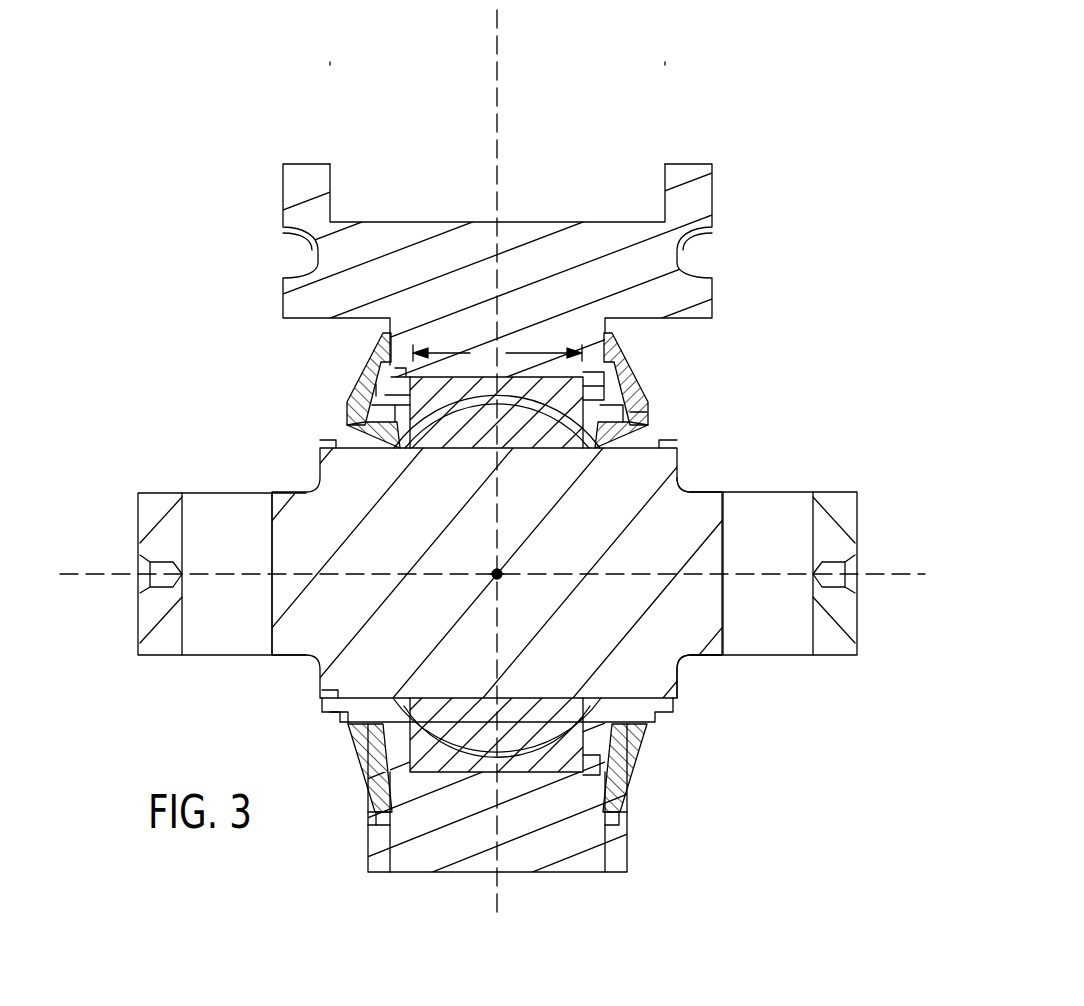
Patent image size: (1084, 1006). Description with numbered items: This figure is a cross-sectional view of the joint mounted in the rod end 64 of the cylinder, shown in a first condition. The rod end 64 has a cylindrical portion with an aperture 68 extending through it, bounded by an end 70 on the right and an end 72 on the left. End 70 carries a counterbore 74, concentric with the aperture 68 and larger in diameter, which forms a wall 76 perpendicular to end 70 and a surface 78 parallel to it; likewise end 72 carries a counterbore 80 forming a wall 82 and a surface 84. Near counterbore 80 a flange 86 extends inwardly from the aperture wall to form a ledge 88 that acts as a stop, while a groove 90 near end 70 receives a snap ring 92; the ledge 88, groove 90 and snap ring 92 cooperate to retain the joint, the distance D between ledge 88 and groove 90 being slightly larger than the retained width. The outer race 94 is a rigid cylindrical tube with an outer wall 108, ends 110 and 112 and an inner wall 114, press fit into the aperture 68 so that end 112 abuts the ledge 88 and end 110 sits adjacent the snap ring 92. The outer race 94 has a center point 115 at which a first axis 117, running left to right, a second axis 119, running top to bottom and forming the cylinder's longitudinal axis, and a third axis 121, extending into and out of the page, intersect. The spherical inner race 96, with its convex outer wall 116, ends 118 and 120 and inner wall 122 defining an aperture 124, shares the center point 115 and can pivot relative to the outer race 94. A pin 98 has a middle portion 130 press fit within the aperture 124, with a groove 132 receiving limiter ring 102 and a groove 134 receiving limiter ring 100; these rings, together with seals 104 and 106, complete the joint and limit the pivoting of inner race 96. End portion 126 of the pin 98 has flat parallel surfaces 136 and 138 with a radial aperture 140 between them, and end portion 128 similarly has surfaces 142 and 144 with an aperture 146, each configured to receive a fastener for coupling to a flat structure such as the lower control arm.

The rod end 64 is at (260, 180).
The aperture 68 is at (548, 385).
The end 70 is at (626, 862).
The end 72 is at (370, 868).
The counterbore 74 is at (604, 830).
The wall 76 is at (627, 827).
The surface 78 is at (612, 825).
The counterbore 80 is at (392, 836).
The wall 82 is at (374, 827).
The surface 84 is at (380, 822).
The flange 86 is at (376, 757).
The ledge 88 is at (428, 778).
The groove 90 is at (583, 776).
The snap ring 92 is at (620, 377).
The outer race 94 is at (648, 412).
The inner race 96 is at (648, 428).
The pin 98 is at (868, 484).
The limiter ring 100 is at (682, 466).
The limiter ring 102 is at (347, 436).
The seal 104 is at (636, 352).
The seal 106 is at (372, 342).
The outer wall 108 is at (517, 778).
The end 110 is at (645, 400).
The end 112 is at (384, 380).
The inner wall 114 is at (352, 726).
The center point 115 is at (500, 573).
The outer wall 116 is at (388, 390).
The first axis 117 is at (73, 575).
The end 118 is at (603, 452).
The second axis 119 is at (500, 66).
The end 120 is at (350, 447).
The third axis 121 is at (496, 578).
The inner wall 122 is at (517, 450).
The aperture 124 is at (325, 472).
The end portion 126 is at (133, 482).
The end portion 128 is at (838, 682).
The middle portion 130 is at (648, 733).
The groove 132 is at (330, 700).
The groove 134 is at (681, 690).
The surface 136 is at (165, 492).
The surface 138 is at (152, 658).
The aperture 140 is at (183, 632).
The surface 142 is at (823, 492).
The surface 144 is at (713, 657).
The aperture 146 is at (810, 604).
The distance D is at (497, 354).